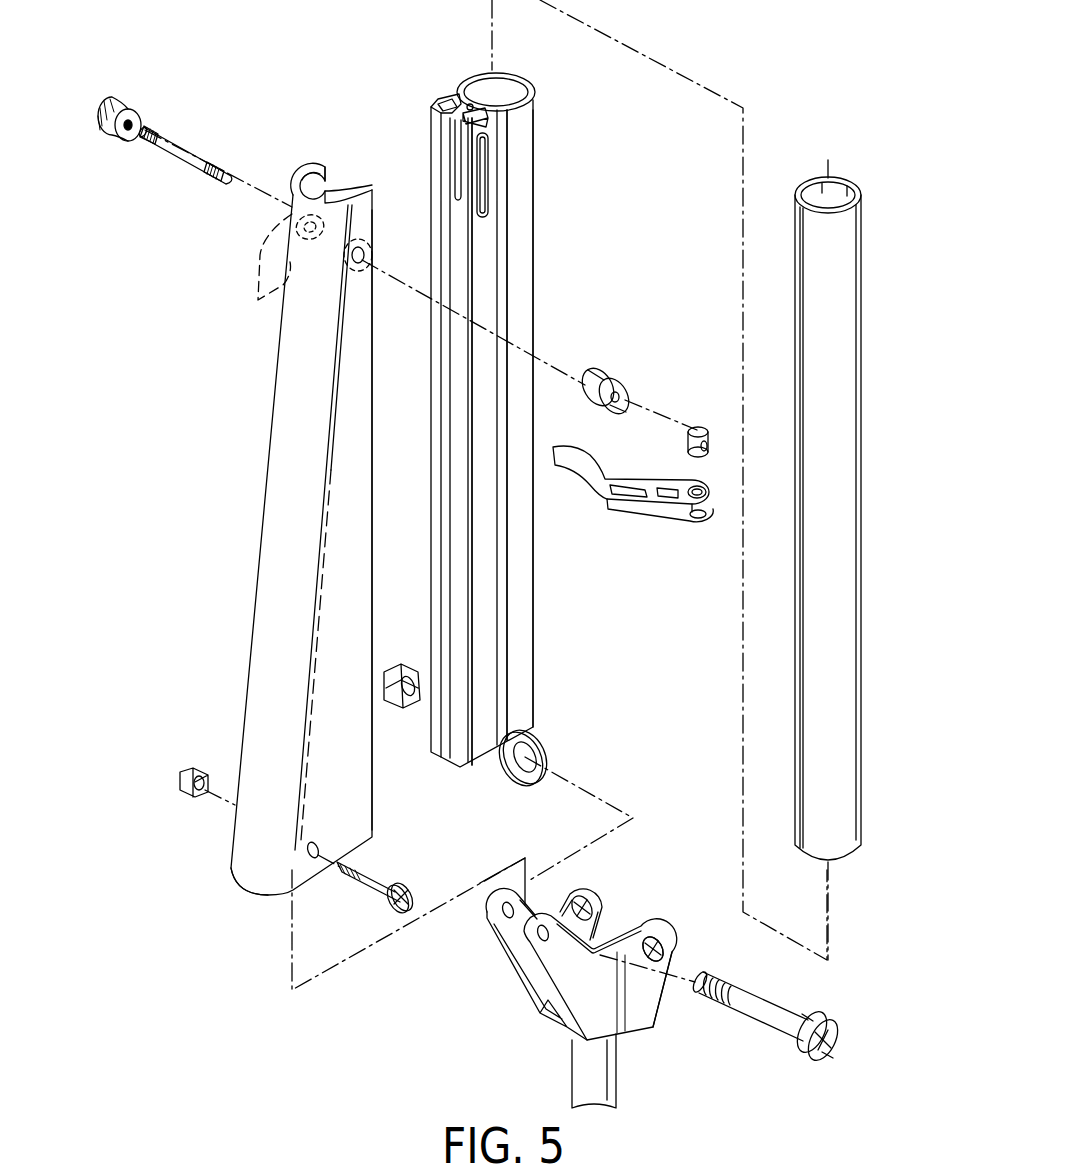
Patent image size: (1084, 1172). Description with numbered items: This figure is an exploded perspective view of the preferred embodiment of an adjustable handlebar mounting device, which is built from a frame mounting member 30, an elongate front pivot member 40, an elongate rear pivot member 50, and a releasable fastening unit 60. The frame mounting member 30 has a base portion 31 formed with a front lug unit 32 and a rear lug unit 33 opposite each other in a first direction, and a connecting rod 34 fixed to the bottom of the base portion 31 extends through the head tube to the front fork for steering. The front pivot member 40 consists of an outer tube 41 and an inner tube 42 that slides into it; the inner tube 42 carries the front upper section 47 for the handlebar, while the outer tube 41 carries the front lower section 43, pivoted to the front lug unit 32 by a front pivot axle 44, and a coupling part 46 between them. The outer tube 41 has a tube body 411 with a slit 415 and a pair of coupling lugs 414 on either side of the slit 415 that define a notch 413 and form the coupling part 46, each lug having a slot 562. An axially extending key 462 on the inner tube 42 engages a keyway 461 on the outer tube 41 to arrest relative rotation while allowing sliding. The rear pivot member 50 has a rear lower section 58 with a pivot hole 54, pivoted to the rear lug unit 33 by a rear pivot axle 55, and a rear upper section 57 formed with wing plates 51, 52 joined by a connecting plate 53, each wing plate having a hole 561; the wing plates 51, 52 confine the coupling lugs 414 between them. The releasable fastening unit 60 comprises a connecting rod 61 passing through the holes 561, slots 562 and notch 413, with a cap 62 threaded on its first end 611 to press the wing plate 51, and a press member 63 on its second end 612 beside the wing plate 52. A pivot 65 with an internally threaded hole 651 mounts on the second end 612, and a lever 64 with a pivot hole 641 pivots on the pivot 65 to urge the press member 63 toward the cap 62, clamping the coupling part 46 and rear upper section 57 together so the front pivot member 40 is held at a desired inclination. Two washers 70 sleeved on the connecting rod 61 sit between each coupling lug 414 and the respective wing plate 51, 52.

The frame mounting member 30 is at (575, 973).
The base portion 31 is at (560, 1020).
The front lug unit 32 is at (672, 935).
The rear lug unit 33 is at (522, 955).
The connecting rod 34 is at (582, 1078).
The front pivot member 40 is at (534, 195).
The outer tube 41 is at (533, 668).
The tube body 411 is at (525, 150).
The notch 413 is at (446, 113).
The coupling lugs 414 is at (480, 263).
The slit 415 is at (456, 103).
The inner tube 42 is at (862, 255).
The front lower section 43 is at (548, 748).
The front pivot axle 44 is at (778, 1000).
The coupling part 46 is at (330, 187).
The keyway 461 is at (471, 103).
The key 462 is at (801, 220).
The front upper section 47 is at (822, 183).
The rear pivot member 50 is at (262, 522).
The wing plate 51 is at (322, 166).
The wing plate 52 is at (352, 460).
The connecting plate 53 is at (307, 182).
The pivot hole 54 is at (312, 860).
The rear pivot axle 55 is at (382, 872).
The holes 561 is at (366, 252).
The slots 562 is at (480, 180).
The rear upper section 57 is at (302, 205).
The rear lower section 58 is at (245, 878).
The releasable fastening unit 60 is at (666, 528).
The connecting rod 61 is at (172, 158).
The first end 611 is at (142, 148).
The second end 612 is at (210, 178).
The cap 62 is at (97, 140).
The press member 63 is at (606, 372).
The lever 64 is at (605, 512).
The pivot hole 641 is at (688, 490).
The pivot 65 is at (697, 427).
The internally threaded hole 651 is at (706, 445).
The washers 70 is at (273, 292).